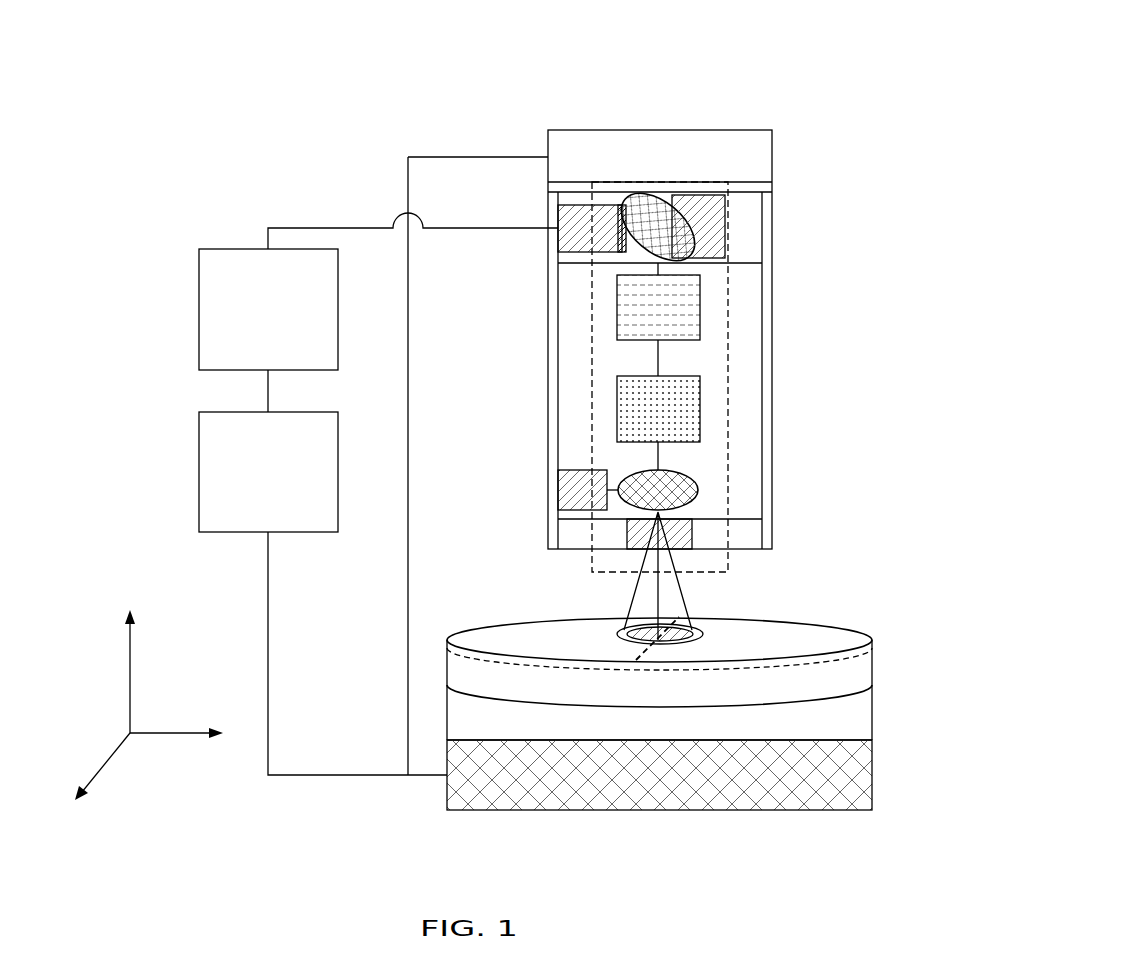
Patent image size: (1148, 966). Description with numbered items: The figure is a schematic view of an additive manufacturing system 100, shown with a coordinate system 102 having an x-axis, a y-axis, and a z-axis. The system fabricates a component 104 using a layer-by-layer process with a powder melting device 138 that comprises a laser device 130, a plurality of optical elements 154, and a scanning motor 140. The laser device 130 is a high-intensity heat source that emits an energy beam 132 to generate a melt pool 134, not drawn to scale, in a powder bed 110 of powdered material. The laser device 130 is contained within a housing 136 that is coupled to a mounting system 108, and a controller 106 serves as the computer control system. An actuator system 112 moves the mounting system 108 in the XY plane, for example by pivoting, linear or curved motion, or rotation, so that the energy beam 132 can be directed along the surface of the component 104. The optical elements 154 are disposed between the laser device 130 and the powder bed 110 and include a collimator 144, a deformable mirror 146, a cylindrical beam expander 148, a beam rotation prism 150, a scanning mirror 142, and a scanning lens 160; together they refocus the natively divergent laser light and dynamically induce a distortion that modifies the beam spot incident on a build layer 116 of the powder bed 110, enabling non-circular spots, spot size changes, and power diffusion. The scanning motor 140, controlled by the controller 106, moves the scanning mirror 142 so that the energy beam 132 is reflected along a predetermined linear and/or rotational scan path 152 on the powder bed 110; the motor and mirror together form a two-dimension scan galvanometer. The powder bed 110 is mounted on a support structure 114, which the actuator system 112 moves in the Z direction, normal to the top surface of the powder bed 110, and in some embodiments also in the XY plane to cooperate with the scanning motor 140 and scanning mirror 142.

The additive manufacturing system 100 is at (847, 58).
The coordinate system 102 is at (86, 696).
The component 104 is at (858, 672).
The controller 106 is at (199, 306).
The mounting system 108 is at (762, 158).
The powder bed 110 is at (858, 722).
The actuator system 112 is at (199, 470).
The support structure 114 is at (858, 783).
The build layer 116 is at (828, 642).
The laser device 130 is at (558, 212).
The energy beam 132 is at (762, 280).
The melt pool 134 is at (703, 634).
The housing 136 is at (772, 366).
The powder melting device 138 is at (902, 276).
The scanning motor 140 is at (575, 470).
The scanning mirror 142 is at (762, 482).
The collimator 144 is at (620, 252).
The deformable mirror 146 is at (762, 230).
The cylindrical beam expander 148 is at (762, 316).
The beam rotation prism 150 is at (600, 404).
The scan path 152 is at (637, 658).
The optical elements 154 is at (762, 400).
The scanning lens 160 is at (762, 537).